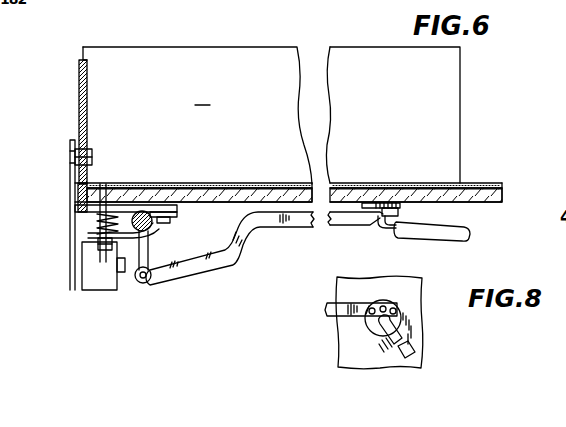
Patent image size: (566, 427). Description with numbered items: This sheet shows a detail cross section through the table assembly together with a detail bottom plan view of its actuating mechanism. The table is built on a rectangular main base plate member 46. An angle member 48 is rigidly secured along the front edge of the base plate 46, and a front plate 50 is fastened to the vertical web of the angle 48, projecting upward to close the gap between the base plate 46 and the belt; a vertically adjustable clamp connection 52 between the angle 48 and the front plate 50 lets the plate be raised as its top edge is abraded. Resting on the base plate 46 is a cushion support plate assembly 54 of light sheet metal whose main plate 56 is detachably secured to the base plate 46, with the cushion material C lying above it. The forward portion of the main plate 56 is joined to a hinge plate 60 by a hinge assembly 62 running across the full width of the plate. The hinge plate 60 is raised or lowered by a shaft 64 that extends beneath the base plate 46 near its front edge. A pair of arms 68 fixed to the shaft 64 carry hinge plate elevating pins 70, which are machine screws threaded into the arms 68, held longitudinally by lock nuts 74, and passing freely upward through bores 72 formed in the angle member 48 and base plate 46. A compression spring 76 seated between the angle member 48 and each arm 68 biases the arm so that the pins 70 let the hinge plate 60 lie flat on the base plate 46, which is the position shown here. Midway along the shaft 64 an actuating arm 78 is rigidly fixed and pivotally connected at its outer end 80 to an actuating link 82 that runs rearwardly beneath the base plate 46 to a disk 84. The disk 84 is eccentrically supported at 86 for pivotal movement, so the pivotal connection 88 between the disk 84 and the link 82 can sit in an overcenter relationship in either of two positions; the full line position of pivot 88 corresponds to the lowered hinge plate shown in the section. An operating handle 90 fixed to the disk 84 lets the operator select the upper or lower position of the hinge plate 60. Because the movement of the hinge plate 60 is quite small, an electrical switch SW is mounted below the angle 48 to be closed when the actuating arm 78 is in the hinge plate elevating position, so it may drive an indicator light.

In FIG. 6, the main base plate member 46 is at (488, 201).
In FIG. 6, the angle member 48 is at (78, 197).
In FIG. 6, the front plate 50 is at (80, 116).
In FIG. 6, the vertically adjustable clamp connection 52 is at (70, 155).
In FIG. 6, the cushion support plate assembly 54 is at (401, 184).
In FIG. 6, the main plate 56 is at (355, 185).
In FIG. 6, the hinge plate 60 is at (172, 186).
In FIG. 6, the hinge assembly 62 is at (250, 184).
In FIG. 6, the shaft 64 is at (152, 226).
In FIG. 6, the arms 68 is at (90, 237).
In FIG. 6, the hinge plate elevating pins 70 is at (108, 255).
In FIG. 6, the bores 72 is at (122, 192).
In FIG. 6, the lock nuts 74 is at (103, 242).
In FIG. 6, the compression spring 76 is at (98, 217).
In FIG. 6, the actuating arm 78 is at (148, 250).
In FIG. 6, the outer end 80 is at (149, 281).
In FIG. 6, the actuating link 82 is at (242, 248).
In FIG. 8, the actuating link 82 is at (328, 305).
In FIG. 8, the disk 84 is at (401, 323).
In FIG. 8, the eccentric support 86 is at (383, 306).
In FIG. 8, the pivotal connection 88 is at (397, 309).
In FIG. 8, the operating handle 90 is at (410, 355).
In FIG. 6, the concrete C is at (202, 96).
In FIG. 6, the electrical switch SW is at (105, 290).